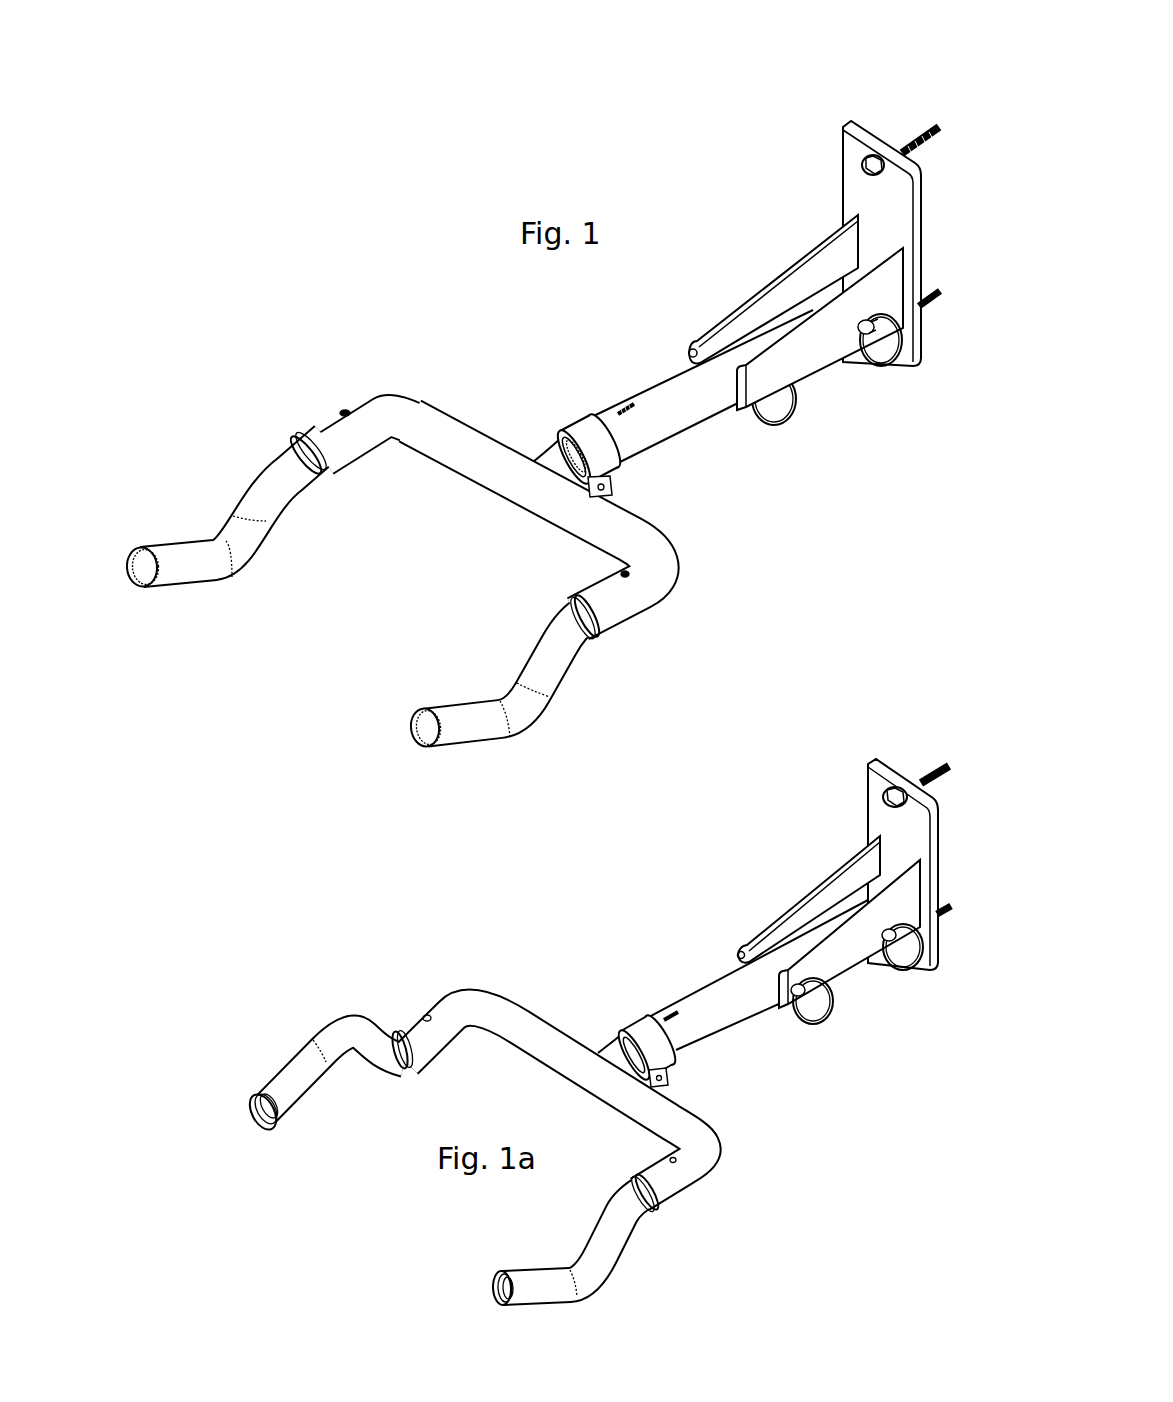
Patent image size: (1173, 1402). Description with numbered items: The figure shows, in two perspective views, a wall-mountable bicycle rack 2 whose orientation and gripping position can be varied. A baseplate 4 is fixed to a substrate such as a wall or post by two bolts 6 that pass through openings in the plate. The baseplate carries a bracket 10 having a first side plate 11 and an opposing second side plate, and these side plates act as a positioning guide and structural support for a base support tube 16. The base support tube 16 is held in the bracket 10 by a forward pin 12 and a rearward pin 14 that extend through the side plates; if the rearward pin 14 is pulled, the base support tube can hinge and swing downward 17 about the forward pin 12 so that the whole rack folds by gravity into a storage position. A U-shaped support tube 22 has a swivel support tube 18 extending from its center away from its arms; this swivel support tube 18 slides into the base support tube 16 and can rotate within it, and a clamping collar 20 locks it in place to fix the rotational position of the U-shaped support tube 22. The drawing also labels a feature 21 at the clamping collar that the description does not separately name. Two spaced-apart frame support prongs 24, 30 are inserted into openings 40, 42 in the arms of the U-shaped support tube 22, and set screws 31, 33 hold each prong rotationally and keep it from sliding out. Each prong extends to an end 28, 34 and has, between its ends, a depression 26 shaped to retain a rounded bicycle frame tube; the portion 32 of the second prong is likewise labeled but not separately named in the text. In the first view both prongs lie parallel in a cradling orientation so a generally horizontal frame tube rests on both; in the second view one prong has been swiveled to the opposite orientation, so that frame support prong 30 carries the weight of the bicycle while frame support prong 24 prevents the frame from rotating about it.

In FIG. 1, the storage rack 2 is at (551, 433).
In FIG. 1, the baseplate 4 is at (923, 195).
In FIG. 1, the bolts 6 is at (938, 127).
In FIG. 1, the bracket 10 is at (752, 346).
In FIG. 1, the first side plate 11 is at (823, 371).
In FIG. 1, the forward pin 12 is at (803, 241).
In FIG. 1, the rearward pin 14 is at (893, 364).
In FIG. 1, the base support tube 16 is at (673, 371).
In FIG. 1, the downward movement 17 is at (682, 386).
In FIG. 1, the swivel support tube 18 is at (616, 435).
In FIG. 1, the clamping collar 20 is at (613, 490).
In FIG. 1, the set screw 21 is at (627, 424).
In FIG. 1, the U-shaped support tube 22 is at (465, 470).
In FIG. 1, the frame support prong 24 is at (220, 465).
In FIG. 1A, the frame support prong 24 is at (277, 1029).
In FIG. 1, the depression 26 is at (212, 532).
In FIG. 1, the end 28 is at (142, 548).
In FIG. 1, the frame support prong 30 is at (547, 686).
In FIG. 1A, the frame support prong 30 is at (625, 1296).
In FIG. 1, the set screw 31 is at (628, 578).
In FIG. 1, the handle riser 32 is at (493, 698).
In FIG. 1, the set screw 33 is at (345, 410).
In FIG. 1, the end 34 is at (425, 747).
In FIG. 1, the opening 40 is at (578, 603).
In FIG. 1, the opening 42 is at (300, 438).